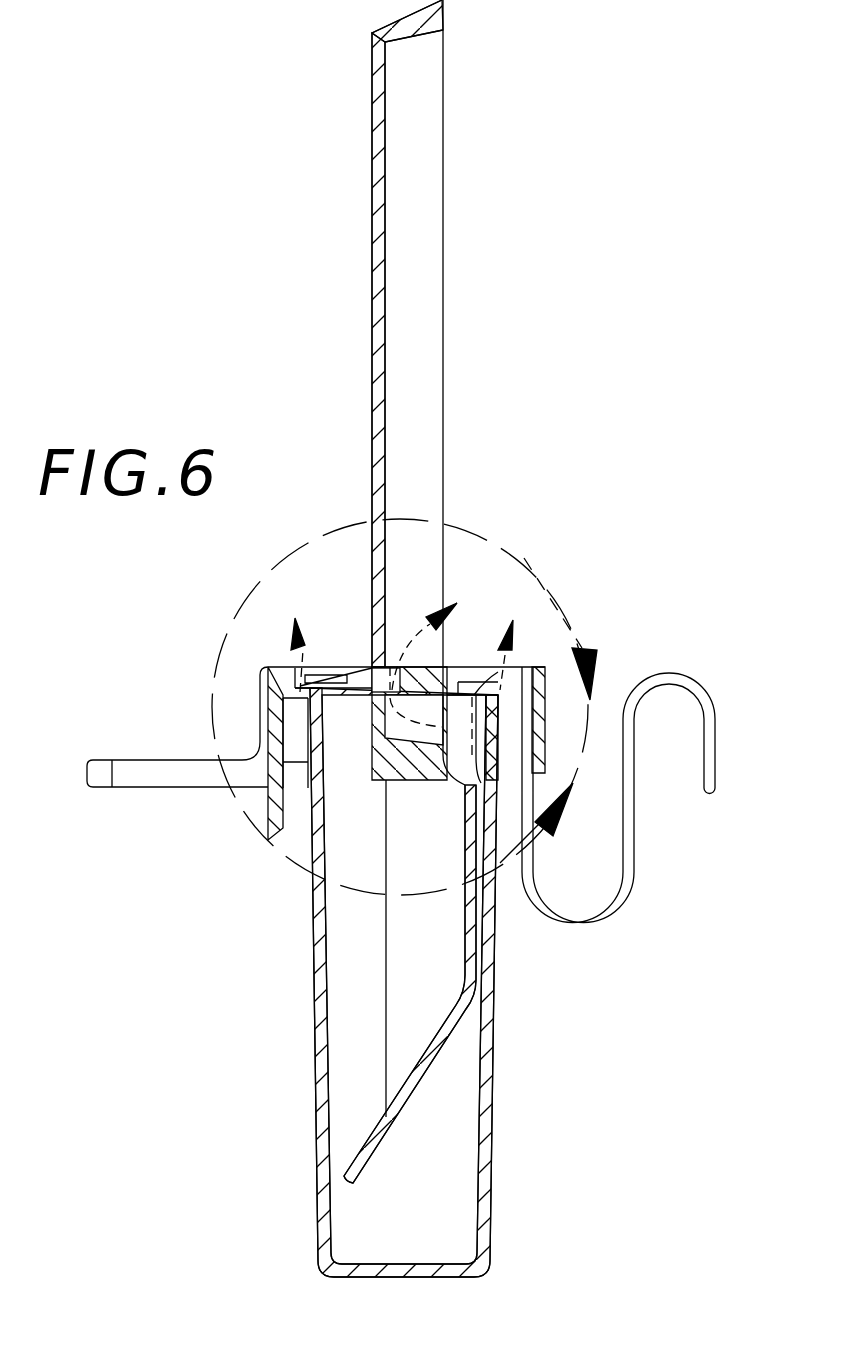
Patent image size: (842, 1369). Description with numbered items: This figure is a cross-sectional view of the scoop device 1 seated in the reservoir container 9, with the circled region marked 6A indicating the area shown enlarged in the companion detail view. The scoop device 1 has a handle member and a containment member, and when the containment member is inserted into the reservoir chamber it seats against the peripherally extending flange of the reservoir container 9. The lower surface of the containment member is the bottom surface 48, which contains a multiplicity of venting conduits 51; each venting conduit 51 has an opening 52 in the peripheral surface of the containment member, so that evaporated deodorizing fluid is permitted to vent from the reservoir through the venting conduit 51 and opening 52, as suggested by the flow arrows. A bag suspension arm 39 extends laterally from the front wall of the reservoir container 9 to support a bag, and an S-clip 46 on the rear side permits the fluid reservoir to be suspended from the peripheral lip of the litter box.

The scoop device 1 is at (372, 217).
The reservoir container 9 is at (543, 988).
The bag suspension arm 39 is at (162, 758).
The S-clip 46 is at (663, 668).
The bottom surface 48 is at (452, 668).
The venting conduit 51 is at (473, 668).
The opening 52 is at (506, 680).
The detail view direction 6A is at (551, 789).